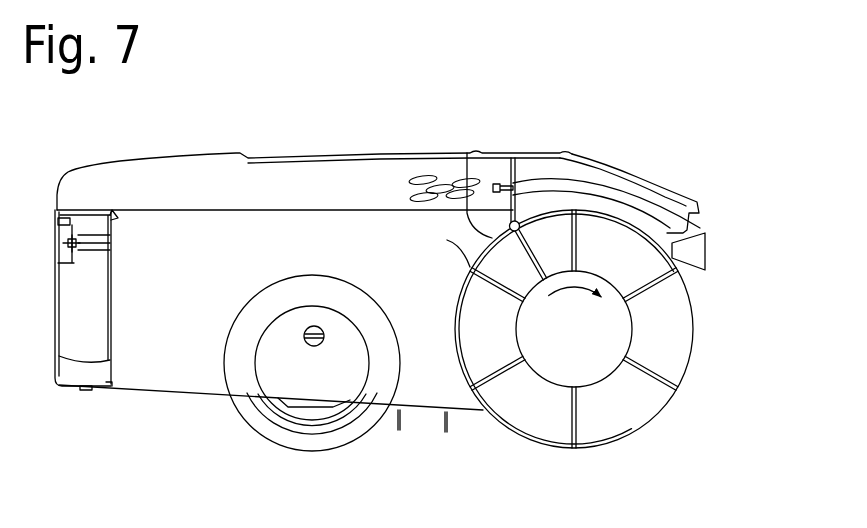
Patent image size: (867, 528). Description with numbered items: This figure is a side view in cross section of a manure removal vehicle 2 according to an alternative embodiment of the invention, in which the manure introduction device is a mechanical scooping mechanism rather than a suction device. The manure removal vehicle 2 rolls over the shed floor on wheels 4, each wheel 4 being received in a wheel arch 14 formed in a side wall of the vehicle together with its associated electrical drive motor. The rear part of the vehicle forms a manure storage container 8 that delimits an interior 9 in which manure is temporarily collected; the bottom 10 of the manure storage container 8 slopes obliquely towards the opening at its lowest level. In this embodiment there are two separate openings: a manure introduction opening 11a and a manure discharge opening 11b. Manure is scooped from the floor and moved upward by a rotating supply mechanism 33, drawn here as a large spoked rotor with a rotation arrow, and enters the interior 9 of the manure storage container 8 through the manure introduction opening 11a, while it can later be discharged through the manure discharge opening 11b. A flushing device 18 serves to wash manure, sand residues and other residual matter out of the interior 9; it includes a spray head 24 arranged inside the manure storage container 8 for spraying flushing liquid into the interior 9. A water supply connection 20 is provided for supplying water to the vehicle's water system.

The manure removal vehicle 2 is at (663, 172).
The wheel 4 is at (313, 435).
The manure storage container 8 is at (205, 243).
The interior 9 is at (167, 275).
The bottom 10 is at (133, 388).
The manure introduction opening 11a is at (467, 153).
The manure discharge opening 11b is at (420, 418).
The wheel arch 14 is at (235, 361).
The flushing device 18 is at (568, 192).
The water supply connection 20 is at (696, 250).
The spray head 24 is at (504, 183).
The rotating supply mechanism 33 is at (648, 350).